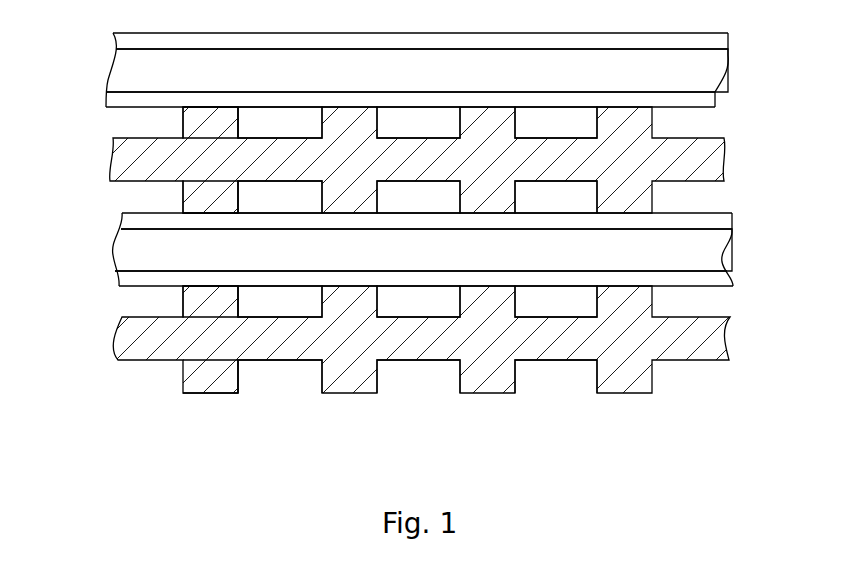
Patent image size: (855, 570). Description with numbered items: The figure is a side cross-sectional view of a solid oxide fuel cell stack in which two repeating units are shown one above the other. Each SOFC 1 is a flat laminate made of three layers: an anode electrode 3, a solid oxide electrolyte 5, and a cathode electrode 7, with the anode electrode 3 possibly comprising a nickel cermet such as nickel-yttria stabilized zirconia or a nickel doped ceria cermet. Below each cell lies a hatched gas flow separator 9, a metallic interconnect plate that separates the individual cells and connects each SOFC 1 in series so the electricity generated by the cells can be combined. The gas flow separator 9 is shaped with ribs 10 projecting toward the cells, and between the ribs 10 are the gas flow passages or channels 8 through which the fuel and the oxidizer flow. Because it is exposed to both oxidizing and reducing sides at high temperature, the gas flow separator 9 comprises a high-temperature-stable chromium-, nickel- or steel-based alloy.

The SOFC 1 is at (420, 157).
The anode electrode 3 is at (113, 40).
The solid oxide electrolyte 5 is at (110, 66).
The cathode electrode 7 is at (106, 96).
The gas flow passages or channels 8 is at (274, 136).
The gas flow separator 9 is at (750, 108).
The ribs 10 is at (183, 122).